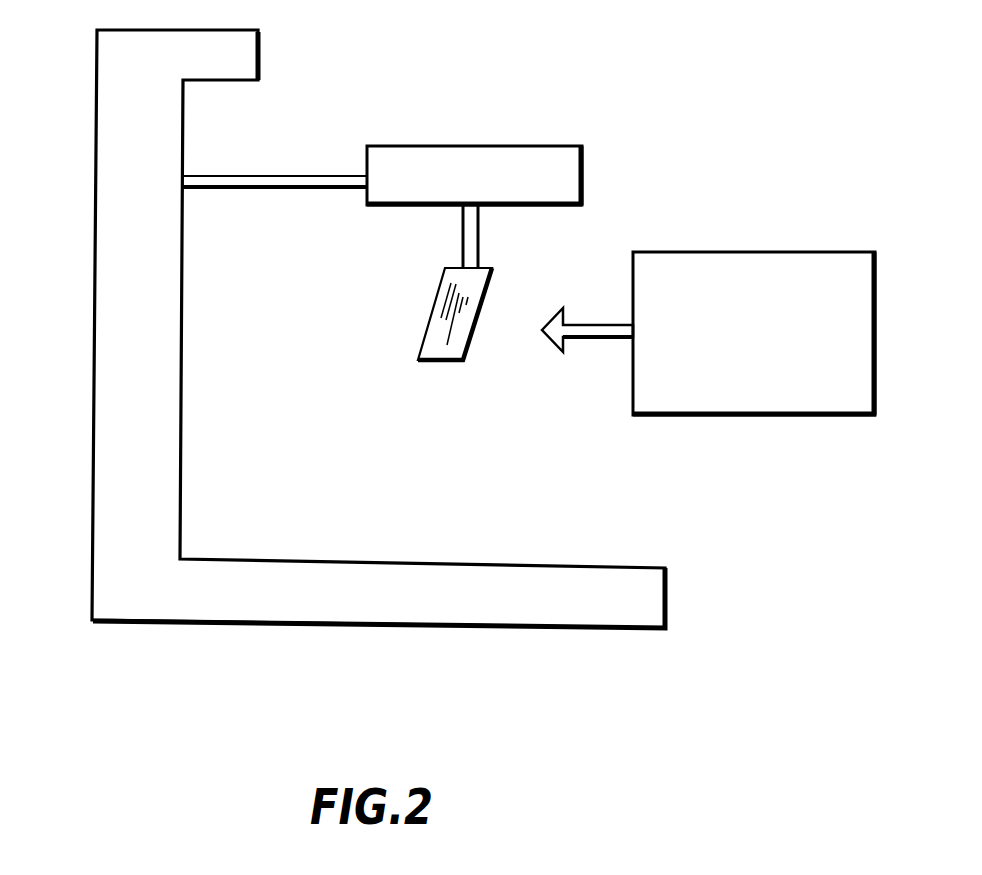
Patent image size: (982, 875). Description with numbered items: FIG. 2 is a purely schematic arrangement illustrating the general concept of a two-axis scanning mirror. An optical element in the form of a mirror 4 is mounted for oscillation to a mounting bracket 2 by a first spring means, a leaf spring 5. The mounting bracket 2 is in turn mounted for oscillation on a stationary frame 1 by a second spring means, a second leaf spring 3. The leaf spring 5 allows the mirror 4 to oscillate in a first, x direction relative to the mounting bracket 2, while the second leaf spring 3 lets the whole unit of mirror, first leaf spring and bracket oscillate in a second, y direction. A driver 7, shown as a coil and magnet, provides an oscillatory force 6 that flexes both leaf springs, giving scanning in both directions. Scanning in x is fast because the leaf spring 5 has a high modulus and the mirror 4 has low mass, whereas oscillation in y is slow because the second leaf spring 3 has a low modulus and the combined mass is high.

The stationary frame 1 is at (96, 176).
The mounting bracket 2 is at (520, 145).
The second leaf spring 3 is at (288, 175).
The mirror 4 is at (445, 305).
The leaf spring 5 is at (480, 238).
The oscillatory force 6 is at (597, 340).
The driver 7 is at (777, 252).